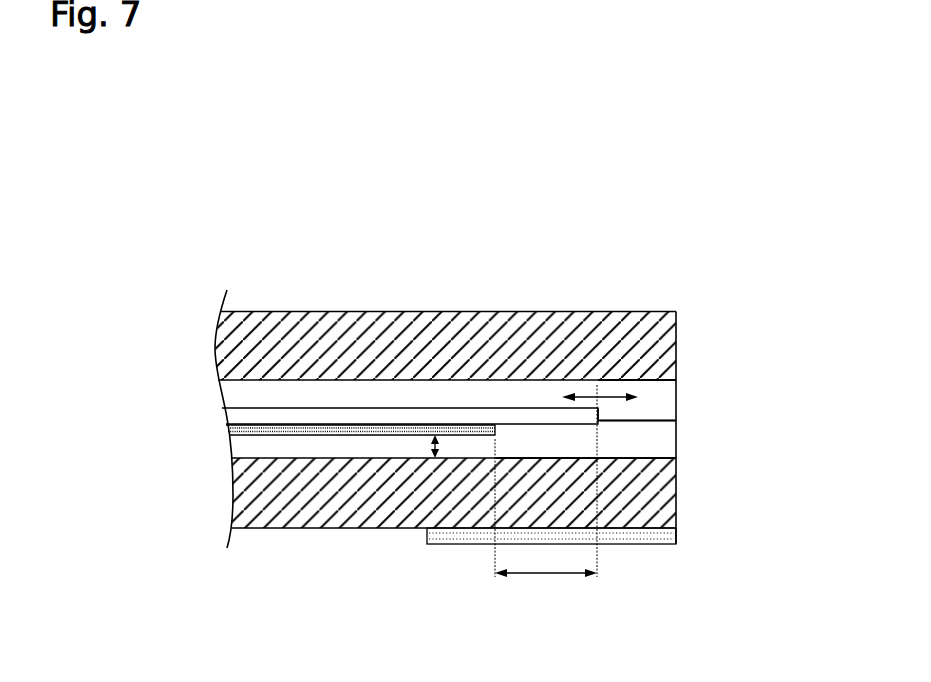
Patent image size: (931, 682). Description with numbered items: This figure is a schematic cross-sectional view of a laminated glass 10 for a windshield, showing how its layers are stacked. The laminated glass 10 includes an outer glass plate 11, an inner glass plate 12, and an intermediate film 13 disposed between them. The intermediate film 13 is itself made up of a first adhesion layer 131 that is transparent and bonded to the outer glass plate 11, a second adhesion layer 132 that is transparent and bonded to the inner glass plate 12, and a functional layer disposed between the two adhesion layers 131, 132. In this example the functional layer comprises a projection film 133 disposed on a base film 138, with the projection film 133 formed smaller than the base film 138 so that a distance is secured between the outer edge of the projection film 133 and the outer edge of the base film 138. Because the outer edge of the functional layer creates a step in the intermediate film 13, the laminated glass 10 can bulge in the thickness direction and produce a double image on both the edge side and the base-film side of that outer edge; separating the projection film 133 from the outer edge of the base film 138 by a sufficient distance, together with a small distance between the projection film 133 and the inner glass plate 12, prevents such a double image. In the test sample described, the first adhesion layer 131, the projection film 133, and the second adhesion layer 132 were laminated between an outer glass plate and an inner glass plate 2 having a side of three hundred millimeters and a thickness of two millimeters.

The laminated glass 10 is at (431, 208).
The outer glass plate 11 is at (492, 328).
The inner glass plate 12 is at (363, 507).
The intermediate film 13 is at (715, 378).
The first adhesion layer 131 is at (665, 401).
The second adhesion layer 132 is at (657, 437).
The projection film 133 is at (322, 436).
The base film 138 is at (366, 422).
The inner glass plate 2 is at (463, 536).